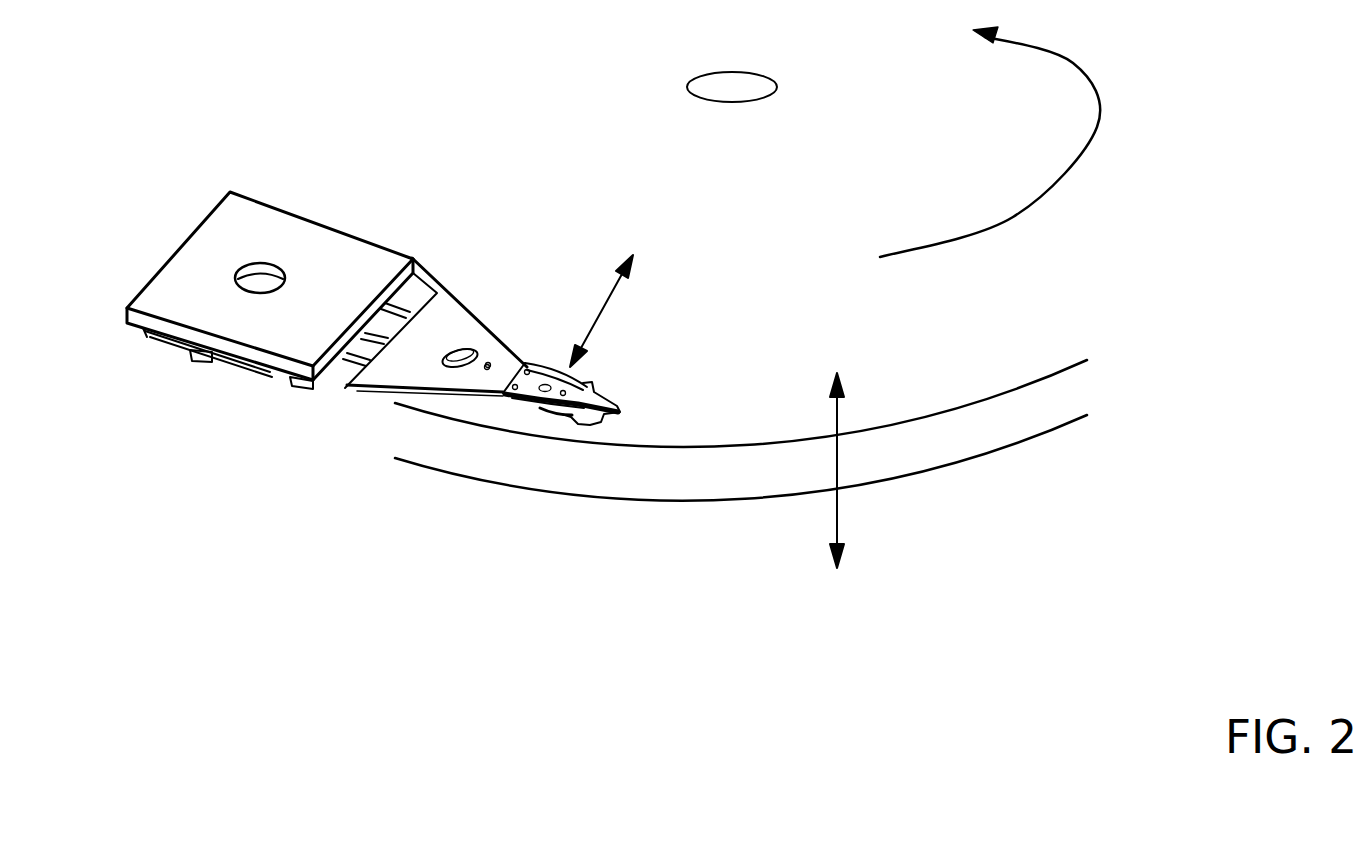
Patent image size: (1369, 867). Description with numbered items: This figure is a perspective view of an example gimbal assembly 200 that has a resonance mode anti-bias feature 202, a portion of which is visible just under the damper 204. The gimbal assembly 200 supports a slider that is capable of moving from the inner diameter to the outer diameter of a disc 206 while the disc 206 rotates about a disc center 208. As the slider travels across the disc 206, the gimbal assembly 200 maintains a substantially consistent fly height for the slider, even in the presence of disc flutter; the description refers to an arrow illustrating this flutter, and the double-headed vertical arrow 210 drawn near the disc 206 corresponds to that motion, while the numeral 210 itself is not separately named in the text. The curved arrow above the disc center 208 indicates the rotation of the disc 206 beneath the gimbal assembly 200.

The gimbal assembly 200 is at (459, 147).
The resonance mode anti-bias feature 202 is at (490, 407).
The damper 204 is at (483, 322).
The disc 206 is at (958, 472).
The disc center 208 is at (732, 87).
The vertical direction arrow 210 is at (837, 508).